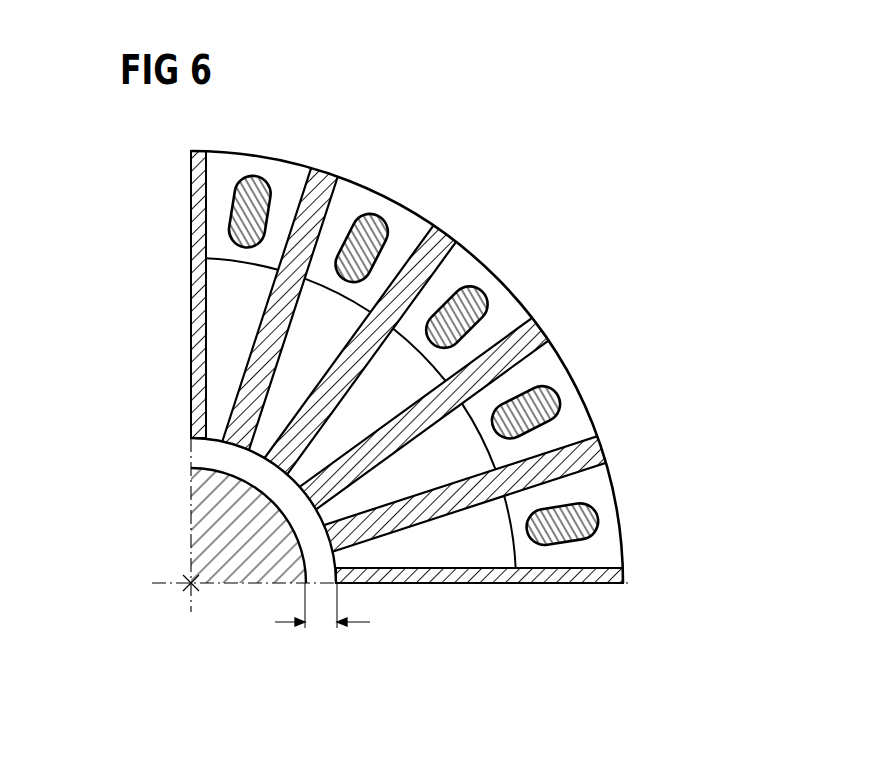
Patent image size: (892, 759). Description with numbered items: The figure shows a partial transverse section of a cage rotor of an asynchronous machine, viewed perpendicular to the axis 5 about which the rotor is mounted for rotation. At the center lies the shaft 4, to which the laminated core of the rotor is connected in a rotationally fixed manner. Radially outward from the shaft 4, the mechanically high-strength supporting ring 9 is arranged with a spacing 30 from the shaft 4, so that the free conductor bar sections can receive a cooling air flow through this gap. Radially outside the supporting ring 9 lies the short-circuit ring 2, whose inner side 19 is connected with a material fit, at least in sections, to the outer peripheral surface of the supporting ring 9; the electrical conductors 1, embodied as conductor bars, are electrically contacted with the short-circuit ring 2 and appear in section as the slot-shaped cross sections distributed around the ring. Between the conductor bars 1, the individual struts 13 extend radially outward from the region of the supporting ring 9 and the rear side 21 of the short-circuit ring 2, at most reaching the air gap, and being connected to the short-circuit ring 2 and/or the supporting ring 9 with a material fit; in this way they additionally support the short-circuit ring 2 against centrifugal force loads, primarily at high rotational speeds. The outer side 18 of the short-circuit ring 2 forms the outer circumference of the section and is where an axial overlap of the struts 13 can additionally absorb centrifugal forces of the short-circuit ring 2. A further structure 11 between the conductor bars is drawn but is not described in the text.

The electrical conductor 1 is at (548, 381).
The short-circuit ring 2 is at (517, 287).
The shaft 4 is at (240, 575).
The axis 5 is at (183, 583).
The supporting ring 9 is at (432, 557).
The connecting web 11 is at (497, 456).
The strut 13 is at (443, 247).
The outer side of the short-circuit ring 18 is at (594, 412).
The inner side of the short-circuit ring 19 is at (513, 549).
The rear side of the short-circuit ring 21 is at (358, 198).
The spacing 30 is at (322, 625).